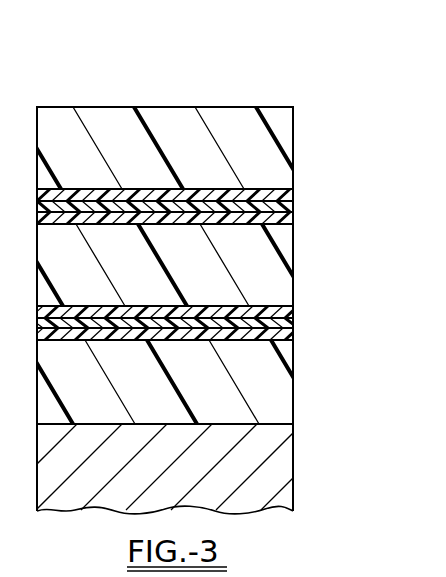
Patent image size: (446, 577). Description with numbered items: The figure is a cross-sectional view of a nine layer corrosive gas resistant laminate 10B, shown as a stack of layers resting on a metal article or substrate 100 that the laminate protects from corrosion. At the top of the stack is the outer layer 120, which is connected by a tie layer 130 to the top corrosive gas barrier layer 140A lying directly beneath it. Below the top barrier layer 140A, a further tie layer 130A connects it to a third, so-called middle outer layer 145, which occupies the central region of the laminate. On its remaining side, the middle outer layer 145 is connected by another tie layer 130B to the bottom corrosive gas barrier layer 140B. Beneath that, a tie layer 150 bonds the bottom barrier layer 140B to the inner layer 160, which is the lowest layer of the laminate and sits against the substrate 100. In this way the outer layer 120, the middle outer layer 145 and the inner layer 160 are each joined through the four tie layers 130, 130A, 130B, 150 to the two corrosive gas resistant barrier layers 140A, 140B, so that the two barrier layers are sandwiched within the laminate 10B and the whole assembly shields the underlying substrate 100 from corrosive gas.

The nine layer laminate 10B is at (156, 104).
The outer layer 120 is at (293, 157).
The tie layer 130 is at (293, 192).
The top corrosive gas barrier layer 140A is at (293, 205).
The tie layer 130A is at (293, 215).
The middle outer layer 145 is at (293, 268).
The tie layer 130B is at (293, 310).
The bottom corrosive gas barrier layer 140B is at (293, 320).
The tie layer 150 is at (293, 333).
The inner layer 160 is at (293, 385).
The metal article or substrate 100 is at (293, 460).